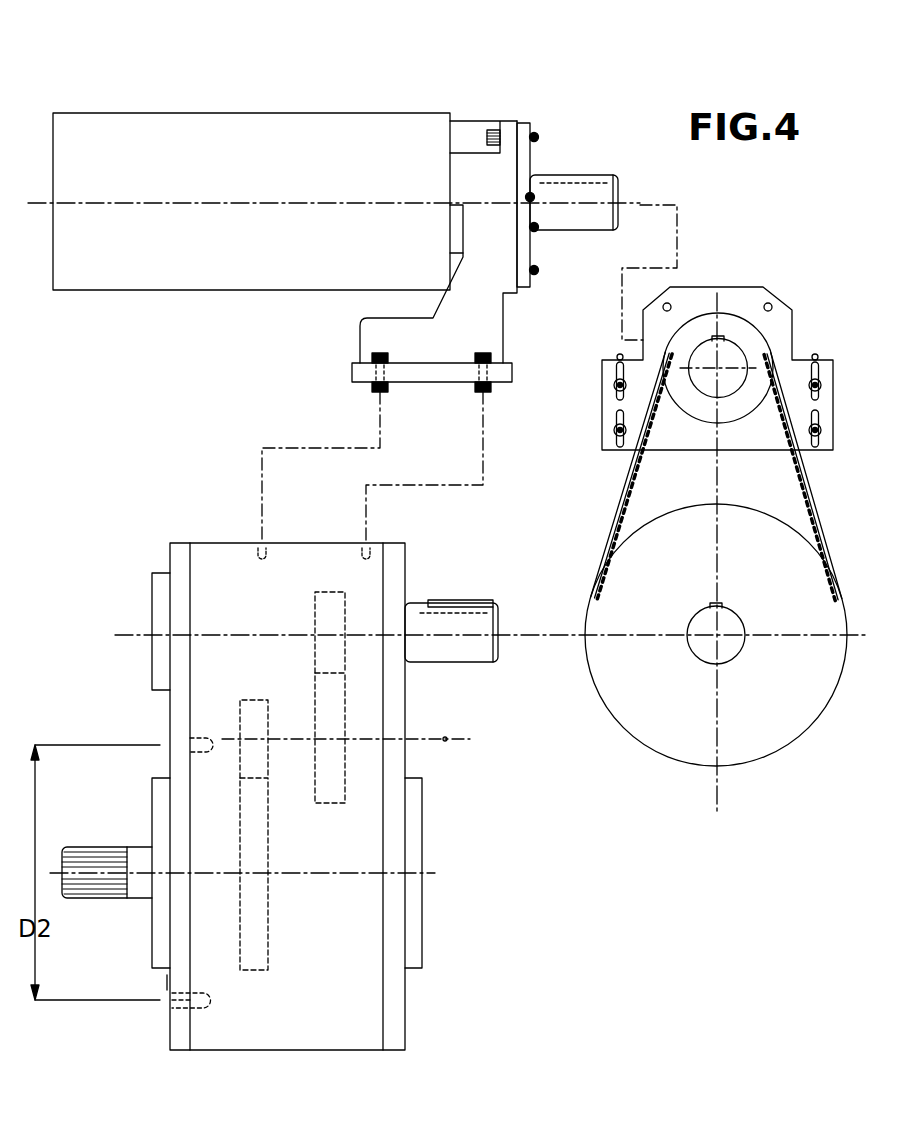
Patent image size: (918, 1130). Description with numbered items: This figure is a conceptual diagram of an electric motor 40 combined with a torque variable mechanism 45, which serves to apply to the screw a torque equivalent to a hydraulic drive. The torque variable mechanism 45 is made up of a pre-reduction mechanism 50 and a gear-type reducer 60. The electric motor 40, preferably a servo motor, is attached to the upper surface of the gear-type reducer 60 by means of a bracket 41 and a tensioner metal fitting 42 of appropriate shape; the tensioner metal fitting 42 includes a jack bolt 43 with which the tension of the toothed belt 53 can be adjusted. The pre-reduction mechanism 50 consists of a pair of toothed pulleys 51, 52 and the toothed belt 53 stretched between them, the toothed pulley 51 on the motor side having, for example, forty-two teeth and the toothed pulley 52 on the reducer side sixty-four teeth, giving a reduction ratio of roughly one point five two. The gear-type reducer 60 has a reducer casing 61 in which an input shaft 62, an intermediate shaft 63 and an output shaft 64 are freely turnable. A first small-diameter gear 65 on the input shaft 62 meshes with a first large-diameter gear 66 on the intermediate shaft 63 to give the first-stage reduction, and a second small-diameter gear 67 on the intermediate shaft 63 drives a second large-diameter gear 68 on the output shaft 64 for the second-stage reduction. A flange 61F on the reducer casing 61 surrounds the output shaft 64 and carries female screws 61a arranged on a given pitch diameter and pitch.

The electric motor 40 is at (279, 102).
The bracket 41 is at (480, 320).
The tensioner metal fitting 42 is at (524, 132).
The jack bolt 43 is at (523, 192).
The torque variable mechanism 45 is at (622, 828).
The pre-reduction mechanism 50 is at (641, 762).
The toothed pulley 51 is at (738, 328).
The toothed pulley 52 is at (764, 732).
The toothed belt 53 is at (616, 509).
The gear-type reducer 60 is at (455, 932).
The reducer casing 61 is at (216, 701).
The female screws 61a is at (210, 998).
The flange 61F is at (167, 981).
The input shaft 62 is at (448, 652).
The intermediate shaft 63 is at (445, 743).
The output shaft 64 is at (101, 862).
The first small-diameter gear 65 is at (315, 619).
The first large-diameter gear 66 is at (315, 698).
The second small-diameter gear 67 is at (268, 760).
The second large-diameter gear 68 is at (267, 935).